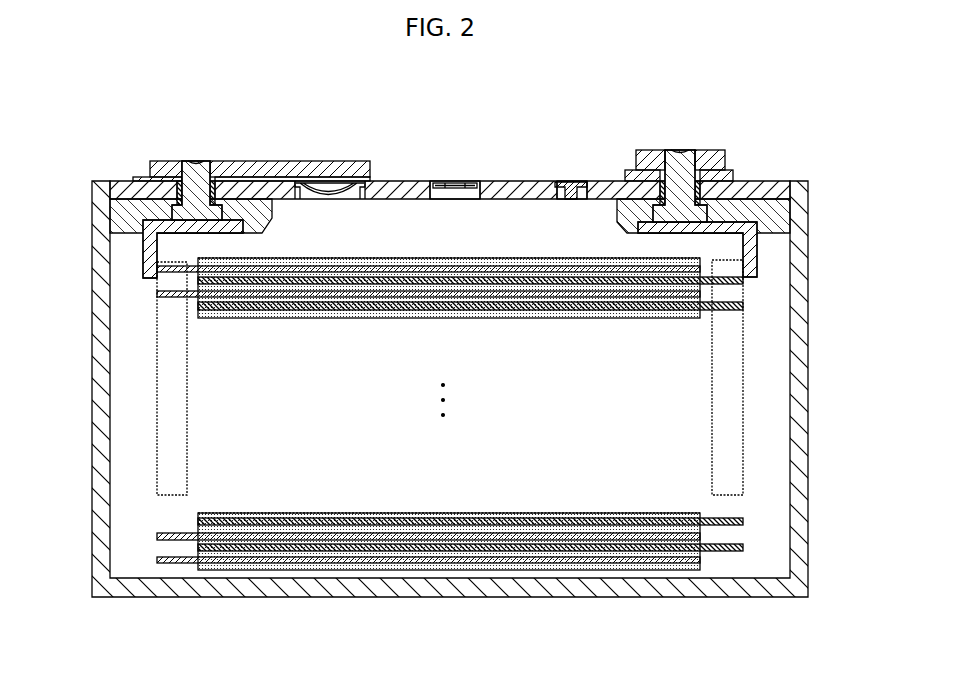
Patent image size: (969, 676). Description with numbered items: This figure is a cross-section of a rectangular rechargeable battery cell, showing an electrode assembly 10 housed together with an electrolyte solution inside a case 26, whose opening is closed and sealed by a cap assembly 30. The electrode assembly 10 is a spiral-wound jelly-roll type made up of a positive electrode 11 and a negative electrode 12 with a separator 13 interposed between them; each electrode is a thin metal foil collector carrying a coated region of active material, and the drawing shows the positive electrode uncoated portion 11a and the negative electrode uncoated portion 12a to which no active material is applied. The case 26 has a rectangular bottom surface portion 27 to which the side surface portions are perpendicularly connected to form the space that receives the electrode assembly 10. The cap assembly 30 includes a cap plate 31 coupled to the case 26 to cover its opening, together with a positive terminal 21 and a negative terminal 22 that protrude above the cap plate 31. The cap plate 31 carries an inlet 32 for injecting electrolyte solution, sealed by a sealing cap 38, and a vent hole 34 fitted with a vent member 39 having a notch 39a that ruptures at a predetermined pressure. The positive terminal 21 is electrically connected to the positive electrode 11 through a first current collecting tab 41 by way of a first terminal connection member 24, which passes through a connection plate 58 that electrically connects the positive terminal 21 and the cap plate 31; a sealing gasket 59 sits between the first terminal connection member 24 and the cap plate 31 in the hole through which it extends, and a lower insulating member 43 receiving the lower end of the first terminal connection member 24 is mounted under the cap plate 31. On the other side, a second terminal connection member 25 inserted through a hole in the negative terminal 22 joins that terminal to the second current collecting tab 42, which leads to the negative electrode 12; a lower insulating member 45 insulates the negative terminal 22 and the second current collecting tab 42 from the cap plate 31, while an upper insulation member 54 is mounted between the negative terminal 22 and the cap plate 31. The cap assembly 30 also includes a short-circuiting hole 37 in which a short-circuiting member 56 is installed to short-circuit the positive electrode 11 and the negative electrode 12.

The electrode assembly 10 is at (447, 452).
The positive electrode 11 is at (640, 548).
The positive electrode uncoated portion 11a is at (728, 550).
The negative electrode 12 is at (272, 560).
The negative electrode uncoated portion 12a is at (168, 562).
The separator 13 is at (445, 548).
The positive terminal 21 is at (708, 157).
The negative terminal 22 is at (162, 162).
The first terminal connection member 24 is at (680, 157).
The second terminal connection member 25 is at (195, 158).
The case 26 is at (800, 420).
The bottom surface portion 27 is at (360, 590).
The cap assembly 30 is at (447, 224).
The cap plate 31 is at (775, 190).
The inlet 32 is at (572, 200).
The vent hole 34 is at (455, 200).
The short-circuiting hole 37 is at (298, 190).
The sealing cap 38 is at (571, 167).
The vent member 39 is at (478, 182).
The notch 39a is at (452, 180).
The first current collecting tab 41 is at (730, 293).
The second current collecting tab 42 is at (165, 343).
The lower insulating member 43 is at (777, 217).
The lower insulating member 45 is at (117, 217).
The upper insulation member 54 is at (253, 178).
The short-circuiting member 56 is at (323, 192).
The connection plate 58 is at (733, 172).
The sealing gasket 59 is at (133, 178).